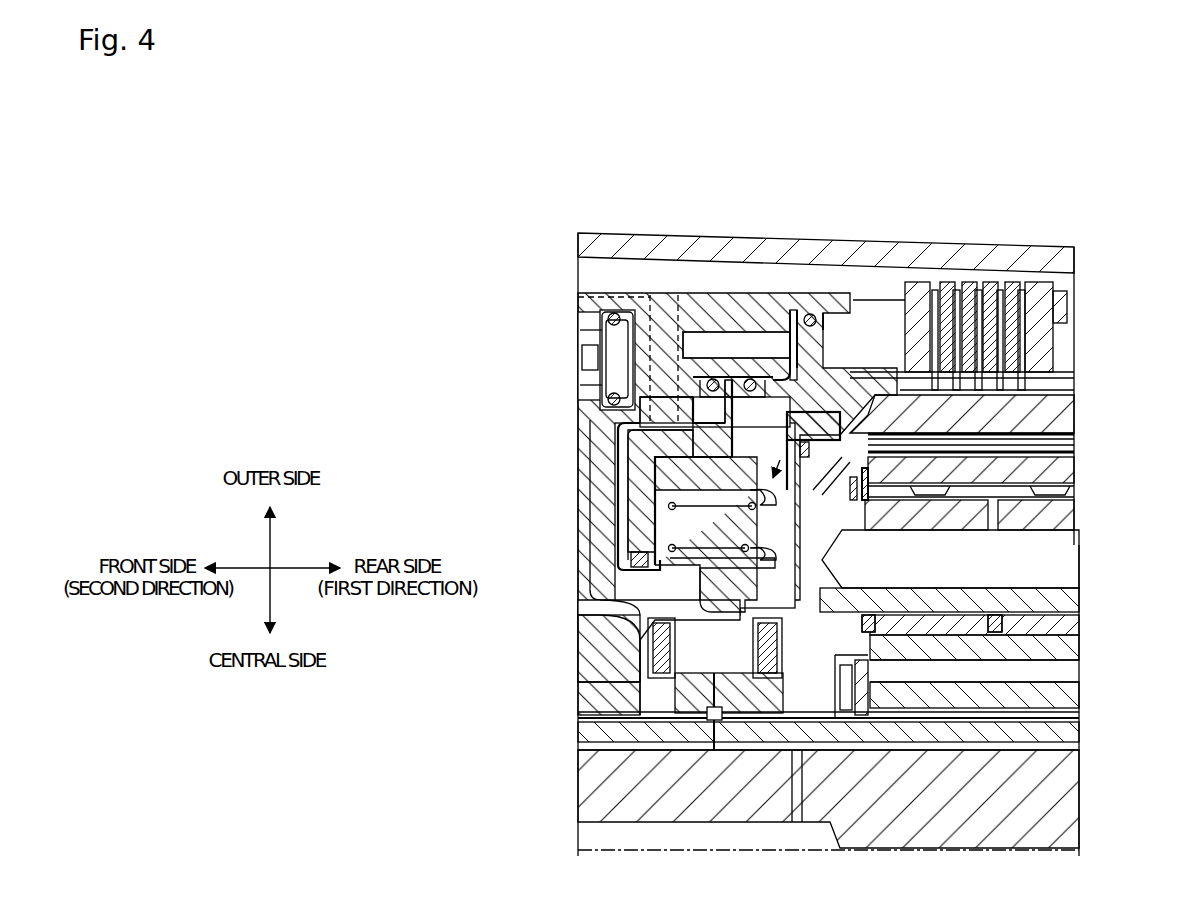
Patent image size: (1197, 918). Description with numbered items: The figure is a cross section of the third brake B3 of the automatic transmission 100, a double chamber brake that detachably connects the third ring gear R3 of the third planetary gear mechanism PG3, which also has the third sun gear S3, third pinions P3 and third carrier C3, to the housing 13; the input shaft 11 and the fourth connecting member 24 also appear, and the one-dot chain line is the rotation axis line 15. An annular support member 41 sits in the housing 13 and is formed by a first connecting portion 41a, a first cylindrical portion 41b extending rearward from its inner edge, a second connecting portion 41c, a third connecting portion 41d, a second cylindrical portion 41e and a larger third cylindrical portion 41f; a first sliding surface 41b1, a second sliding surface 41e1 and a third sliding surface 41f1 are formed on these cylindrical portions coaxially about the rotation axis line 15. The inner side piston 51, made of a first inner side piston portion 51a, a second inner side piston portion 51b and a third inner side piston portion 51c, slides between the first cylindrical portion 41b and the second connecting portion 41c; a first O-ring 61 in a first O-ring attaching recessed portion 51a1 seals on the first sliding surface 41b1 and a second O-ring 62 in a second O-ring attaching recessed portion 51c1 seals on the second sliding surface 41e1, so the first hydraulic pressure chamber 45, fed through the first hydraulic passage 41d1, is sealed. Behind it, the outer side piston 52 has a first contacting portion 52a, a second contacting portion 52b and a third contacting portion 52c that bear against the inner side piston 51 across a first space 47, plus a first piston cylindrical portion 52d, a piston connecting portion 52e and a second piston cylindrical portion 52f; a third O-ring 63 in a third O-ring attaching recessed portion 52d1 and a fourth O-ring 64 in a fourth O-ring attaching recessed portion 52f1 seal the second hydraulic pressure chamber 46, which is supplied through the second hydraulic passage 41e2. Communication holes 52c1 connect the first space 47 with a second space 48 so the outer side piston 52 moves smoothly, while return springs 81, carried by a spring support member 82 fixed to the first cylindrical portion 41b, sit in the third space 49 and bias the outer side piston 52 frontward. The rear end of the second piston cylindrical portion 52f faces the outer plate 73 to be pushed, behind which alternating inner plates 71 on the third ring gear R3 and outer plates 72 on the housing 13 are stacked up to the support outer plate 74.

The automatic transmission 100 is at (873, 152).
The input shaft 11 is at (855, 790).
The housing 13 is at (962, 260).
The rotation axis line 15 is at (700, 852).
The fourth connecting member 24 is at (883, 730).
The support member 41 is at (602, 282).
The first connecting portion 41a is at (612, 462).
The first cylindrical portion 41b is at (638, 650).
The first sliding surface 41b1 is at (612, 537).
The second connecting portion 41c is at (615, 375).
The third connecting portion 41d is at (615, 335).
The first hydraulic passage 41d1 is at (578, 296).
The second cylindrical portion 41e is at (735, 340).
The second sliding surface 41e1 is at (600, 353).
The second hydraulic passage 41e2 is at (648, 355).
The third cylindrical portion 41f is at (822, 300).
The third sliding surface 41f1 is at (836, 300).
The first hydraulic pressure chamber 45 is at (612, 480).
The second hydraulic pressure chamber 46 is at (750, 376).
The first space 47 is at (640, 412).
The second space 48 is at (1050, 446).
The third space 49 is at (872, 545).
The inner side piston 51 is at (605, 440).
The first inner side piston portion 51a is at (630, 525).
The first O-ring attaching recessed portion 51a1 is at (620, 567).
The second inner side piston portion 51b is at (600, 422).
The third inner side piston portion 51c is at (610, 367).
The second O-ring attaching recessed portion 51c1 is at (628, 310).
The outer side piston 52 is at (842, 533).
The first contacting portion 52a is at (622, 497).
The second contacting portion 52b is at (622, 487).
The third contacting portion 52c is at (612, 447).
The communication holes 52c1 is at (1062, 466).
The first piston cylindrical portion 52d is at (745, 345).
The third O-ring attaching recessed portion 52d1 is at (700, 330).
The piston connecting portion 52e is at (802, 300).
The second piston cylindrical portion 52f is at (852, 300).
The fourth O-ring attaching recessed portion 52f1 is at (812, 300).
The first O-ring 61 is at (600, 575).
The second O-ring 62 is at (658, 320).
The third O-ring 63 is at (713, 376).
The fourth O-ring 64 is at (815, 305).
The inner plates 71 is at (1012, 282).
The outer plates 72 is at (998, 290).
The outer plate to be pushed 73 is at (918, 285).
The support outer plate 74 is at (1038, 282).
The return springs 81 is at (650, 585).
The spring support member 82 is at (660, 665).
The third brake B3 is at (888, 280).
The third ring gear R3 is at (1040, 420).
The third sun gear S3 is at (930, 690).
The third pinions P3 is at (983, 645).
The third carrier C3 is at (1027, 607).
The third planetary gear mechanism PG3 is at (802, 668).